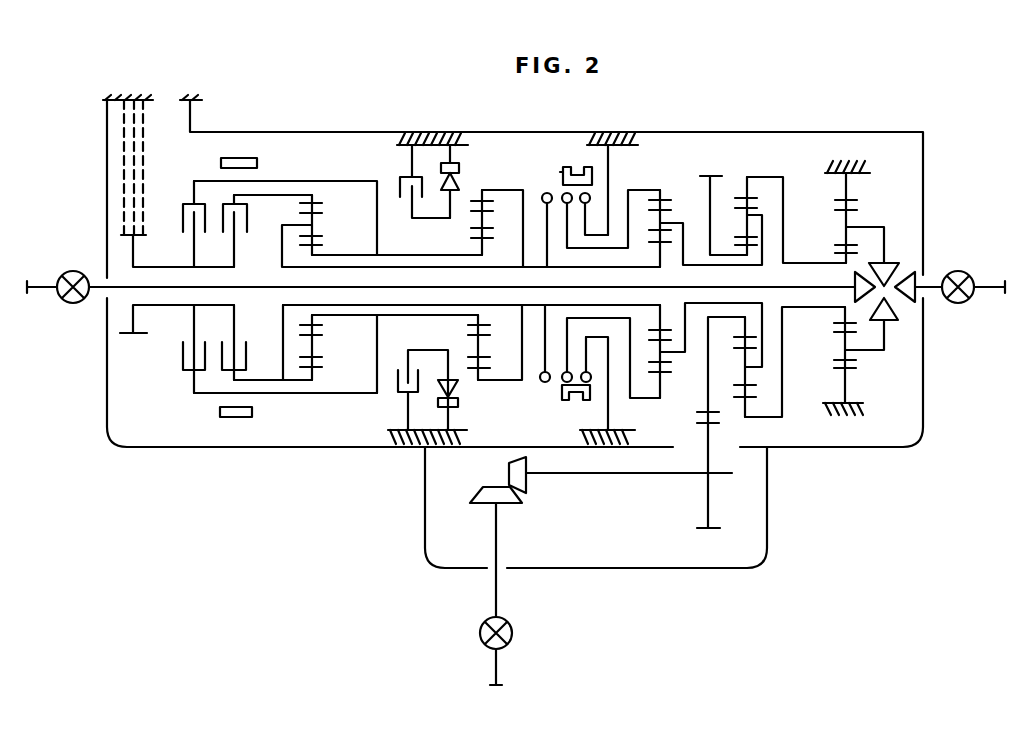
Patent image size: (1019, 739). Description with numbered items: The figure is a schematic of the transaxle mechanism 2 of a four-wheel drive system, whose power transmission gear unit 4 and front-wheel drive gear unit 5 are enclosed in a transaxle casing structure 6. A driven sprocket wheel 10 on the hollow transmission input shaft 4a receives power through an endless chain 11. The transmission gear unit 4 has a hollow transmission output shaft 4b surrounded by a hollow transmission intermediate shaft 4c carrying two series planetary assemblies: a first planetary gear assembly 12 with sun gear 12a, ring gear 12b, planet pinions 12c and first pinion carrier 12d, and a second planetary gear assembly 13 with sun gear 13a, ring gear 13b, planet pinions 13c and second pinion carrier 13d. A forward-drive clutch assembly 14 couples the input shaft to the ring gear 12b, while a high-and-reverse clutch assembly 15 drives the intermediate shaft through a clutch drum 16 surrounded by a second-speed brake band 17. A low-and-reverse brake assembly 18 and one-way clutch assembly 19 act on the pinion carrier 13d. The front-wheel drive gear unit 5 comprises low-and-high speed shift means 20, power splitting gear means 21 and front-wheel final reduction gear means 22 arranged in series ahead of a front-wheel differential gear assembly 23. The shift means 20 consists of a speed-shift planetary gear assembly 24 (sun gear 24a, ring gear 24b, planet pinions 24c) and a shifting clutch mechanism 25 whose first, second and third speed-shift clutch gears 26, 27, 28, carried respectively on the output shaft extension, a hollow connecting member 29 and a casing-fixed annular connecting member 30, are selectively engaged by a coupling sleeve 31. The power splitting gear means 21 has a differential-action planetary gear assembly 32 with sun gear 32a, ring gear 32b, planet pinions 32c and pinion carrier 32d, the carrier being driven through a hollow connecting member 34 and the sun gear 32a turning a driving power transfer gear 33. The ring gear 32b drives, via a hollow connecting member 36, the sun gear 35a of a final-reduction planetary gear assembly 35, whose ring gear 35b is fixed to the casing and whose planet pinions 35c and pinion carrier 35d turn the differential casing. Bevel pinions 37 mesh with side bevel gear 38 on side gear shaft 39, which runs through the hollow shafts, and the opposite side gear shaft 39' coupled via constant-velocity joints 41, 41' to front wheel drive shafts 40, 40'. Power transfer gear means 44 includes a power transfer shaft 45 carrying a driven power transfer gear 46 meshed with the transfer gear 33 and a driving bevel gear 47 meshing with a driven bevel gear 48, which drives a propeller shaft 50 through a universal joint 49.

The transaxle mechanism 2 is at (321, 517).
The power transmission gear unit 4 is at (286, 153).
The transmission input shaft 4a is at (153, 306).
The transmission output shaft 4b is at (280, 305).
The transmission intermediate shaft 4c is at (385, 255).
The front-wheel drive gear unit 5 is at (827, 486).
The transaxle casing structure 6 is at (107, 377).
The driven sprocket wheel 10 is at (134, 252).
The endless chain 11 is at (124, 180).
The first planetary gear assembly 12 is at (354, 374).
The sun gear 12a is at (322, 246).
The ring gear 12b is at (322, 203).
The planet pinions 12c is at (313, 350).
The first pinion carrier 12d is at (288, 222).
The second planetary gear assembly 13 is at (501, 138).
The sun gear 13a is at (473, 238).
The ring gear 13b is at (476, 198).
The planet pinions 13c is at (480, 355).
The second pinion carrier 13d is at (448, 350).
The forward-drive clutch assembly 14 is at (222, 383).
The high-and-reverse clutch assembly 15 is at (180, 385).
The clutch drum 16 is at (318, 394).
The second-speed brake band 17 is at (237, 418).
The low-and-reverse brake assembly 18 is at (392, 166).
The one-way clutch assembly 19 is at (436, 152).
The low-and-high speed shift means 20 is at (635, 119).
The power splitting gear means 21 is at (734, 119).
The front-wheel final reduction gear means 22 is at (849, 118).
The front-wheel differential gear assembly 23 is at (912, 352).
The speed-shift planetary gear assembly 24 is at (693, 137).
The sun gear 24a is at (655, 330).
The ring gear 24b is at (665, 198).
The planet pinions 24c is at (667, 218).
The low-and-high speed shifting clutch mechanism 25 is at (572, 152).
The first speed-shift clutch gear 26 is at (540, 380).
The second speed-shift clutch gear 27 is at (563, 382).
The third speed-shift clutch gear 28 is at (593, 387).
The hollow connecting member 29 is at (623, 397).
The annular connecting member 30 is at (613, 158).
The coupling sleeve 31 is at (560, 172).
The differential-action planetary gear assembly 32 is at (780, 141).
The sun gear 32a is at (752, 335).
The ring gear 32b is at (758, 165).
The planet pinions 32c is at (735, 222).
The pinion carrier 32d is at (768, 208).
The driving power transfer gear 33 is at (718, 174).
The hollow connecting member 34 is at (748, 308).
The final-reduction planetary gear assembly 35 is at (864, 154).
The sun gear 35a is at (843, 250).
The ring gear 35b is at (848, 200).
The planet pinions 35c is at (843, 362).
The pinion carrier 35d is at (870, 350).
The hollow connecting member 36 is at (845, 323).
The bevel pinions 37 is at (890, 262).
The differential side bevel gear 38 is at (855, 281).
The side gear shaft 39 is at (466, 310).
The side gear shaft 39' is at (939, 265).
The front wheel drive shaft 40 is at (65, 276).
The front wheel drive shaft 40' is at (976, 273).
The constant-velocity joint 41 is at (44, 310).
The constant-velocity joint 41' is at (972, 311).
The power transfer gear means 44 is at (631, 538).
The power transfer shaft 45 is at (607, 475).
The driven power transfer gear 46 is at (707, 498).
The driving bevel gear 47 is at (527, 482).
The driven bevel gear 48 is at (480, 503).
The universal joint 49 is at (510, 620).
The propeller shaft 50 is at (495, 665).